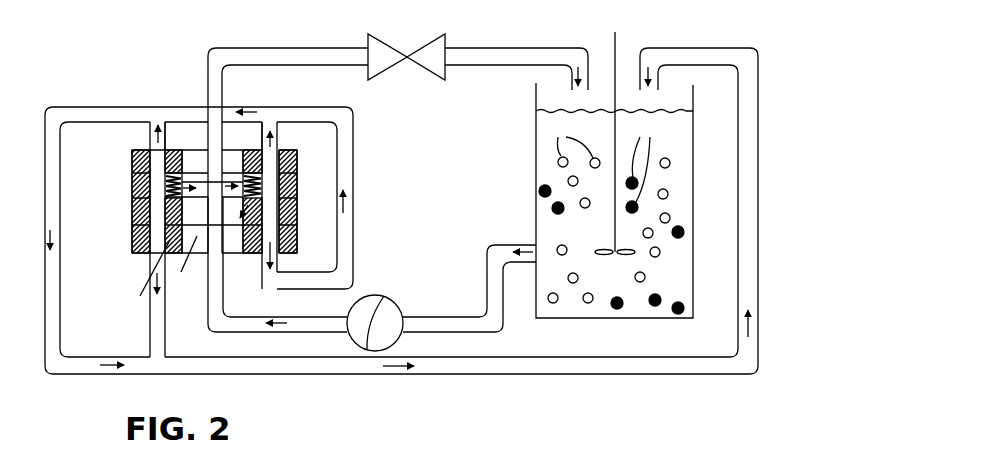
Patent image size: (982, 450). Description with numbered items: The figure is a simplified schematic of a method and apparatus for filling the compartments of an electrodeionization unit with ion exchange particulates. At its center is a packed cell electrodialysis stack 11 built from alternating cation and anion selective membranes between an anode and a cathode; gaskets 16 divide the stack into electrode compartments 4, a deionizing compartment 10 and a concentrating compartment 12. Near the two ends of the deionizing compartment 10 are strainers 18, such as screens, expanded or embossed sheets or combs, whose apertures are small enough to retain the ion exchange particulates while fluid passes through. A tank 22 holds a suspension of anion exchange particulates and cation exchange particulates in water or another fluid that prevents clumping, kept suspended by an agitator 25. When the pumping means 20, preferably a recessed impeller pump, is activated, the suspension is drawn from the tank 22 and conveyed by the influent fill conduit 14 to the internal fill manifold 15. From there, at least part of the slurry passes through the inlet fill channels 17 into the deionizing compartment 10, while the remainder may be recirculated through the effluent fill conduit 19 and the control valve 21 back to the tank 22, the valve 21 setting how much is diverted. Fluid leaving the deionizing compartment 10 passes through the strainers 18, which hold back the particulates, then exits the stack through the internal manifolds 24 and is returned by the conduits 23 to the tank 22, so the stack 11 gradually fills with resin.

The electrode compartments 4 is at (213, 186).
The deionizing compartment 10 is at (255, 193).
The packed cell electrodialysis stack 11 is at (197, 218).
The concentrating compartment 12 is at (255, 203).
The influent fill conduit 14 is at (338, 328).
The internal fill manifold 15 is at (208, 258).
The gaskets 16 is at (132, 232).
The inlet fill channels 17 is at (138, 178).
The strainers 18 is at (197, 190).
The effluent fill conduit 19 is at (288, 50).
The pumping means 20 is at (388, 340).
The control valve 21 is at (402, 50).
The tank 22 is at (697, 187).
The conduits 23 is at (45, 172).
The internal manifolds 24 is at (275, 146).
The agitator 25 is at (612, 45).